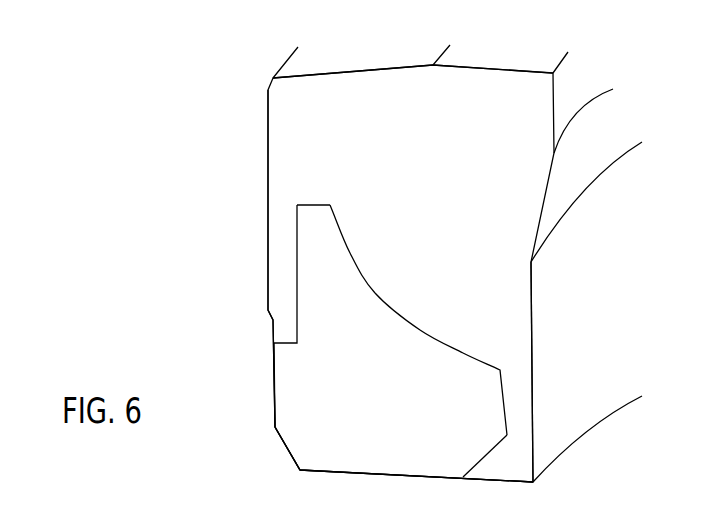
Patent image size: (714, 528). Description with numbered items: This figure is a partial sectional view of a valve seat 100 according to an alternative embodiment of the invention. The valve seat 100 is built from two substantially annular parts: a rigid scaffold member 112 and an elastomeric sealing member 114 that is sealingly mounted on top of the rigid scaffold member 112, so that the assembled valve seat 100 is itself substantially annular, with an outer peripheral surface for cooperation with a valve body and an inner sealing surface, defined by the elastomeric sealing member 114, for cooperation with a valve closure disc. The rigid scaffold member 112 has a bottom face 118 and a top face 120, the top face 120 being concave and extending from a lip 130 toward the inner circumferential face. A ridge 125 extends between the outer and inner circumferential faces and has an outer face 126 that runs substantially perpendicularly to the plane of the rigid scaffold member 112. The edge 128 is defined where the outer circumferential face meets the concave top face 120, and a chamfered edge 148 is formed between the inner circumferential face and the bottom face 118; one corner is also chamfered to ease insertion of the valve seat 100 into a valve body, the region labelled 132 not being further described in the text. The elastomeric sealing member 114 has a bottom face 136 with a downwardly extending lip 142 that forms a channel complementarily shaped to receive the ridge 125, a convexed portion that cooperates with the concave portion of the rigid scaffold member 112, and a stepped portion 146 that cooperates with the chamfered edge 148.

The valve seat 100 is at (237, 155).
The rigid scaffold member 112 is at (352, 437).
The elastomeric sealing member 114 is at (412, 120).
The bottom face 118 is at (323, 473).
The top face 120 is at (374, 296).
The ridge 125 is at (318, 232).
The outer face 126 is at (295, 245).
The edge 128 is at (419, 334).
The lip 130 is at (314, 201).
The chamfered corner 132 is at (280, 440).
The bottom face 136 is at (466, 351).
The downwardly extending lip 142 is at (277, 285).
The stepped portion 146 is at (508, 463).
The chamfered edge 148 is at (482, 458).